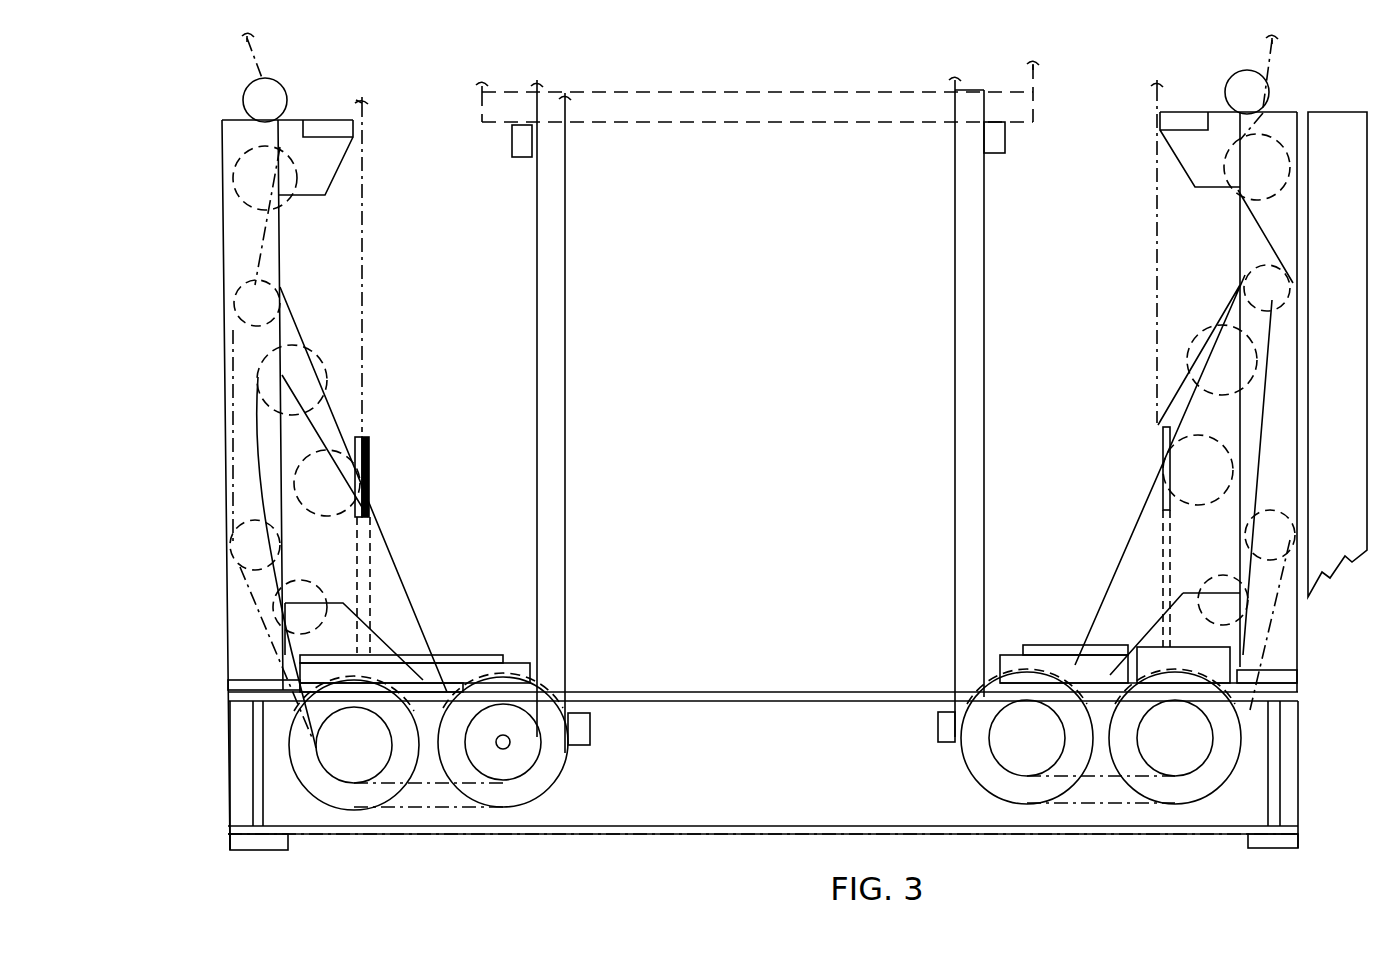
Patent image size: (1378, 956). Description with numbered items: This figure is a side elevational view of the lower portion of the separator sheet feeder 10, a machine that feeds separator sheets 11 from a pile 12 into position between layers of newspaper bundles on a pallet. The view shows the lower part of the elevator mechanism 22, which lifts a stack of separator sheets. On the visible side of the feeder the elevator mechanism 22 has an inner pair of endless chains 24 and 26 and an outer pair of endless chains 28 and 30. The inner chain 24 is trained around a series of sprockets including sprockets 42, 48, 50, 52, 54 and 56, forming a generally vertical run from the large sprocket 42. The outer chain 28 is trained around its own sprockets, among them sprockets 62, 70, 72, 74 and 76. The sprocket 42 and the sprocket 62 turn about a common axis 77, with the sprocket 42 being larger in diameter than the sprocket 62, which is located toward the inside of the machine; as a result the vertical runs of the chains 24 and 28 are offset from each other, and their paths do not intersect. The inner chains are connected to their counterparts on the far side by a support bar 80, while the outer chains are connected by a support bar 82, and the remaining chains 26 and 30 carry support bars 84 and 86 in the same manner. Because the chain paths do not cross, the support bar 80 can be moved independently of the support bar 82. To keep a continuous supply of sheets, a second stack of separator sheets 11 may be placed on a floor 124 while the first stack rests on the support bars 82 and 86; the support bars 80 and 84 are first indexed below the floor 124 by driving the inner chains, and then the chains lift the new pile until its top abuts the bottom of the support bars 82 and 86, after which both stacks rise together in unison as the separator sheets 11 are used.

The separator sheet feeder 10 is at (158, 282).
The separator sheet 11 is at (800, 113).
The pile of separator sheets 12 is at (727, 122).
The elevator mechanism 22 is at (628, 452).
The inner endless chain 24 is at (567, 590).
The inner endless chain 26 is at (953, 540).
The outer endless chain 28 is at (535, 625).
The outer endless chain 30 is at (986, 545).
The sprocket 42 is at (547, 772).
The sprocket 48 is at (254, 101).
The sprocket 50 is at (252, 180).
The sprocket 52 is at (250, 308).
The sprocket 54 is at (240, 548).
The sprocket 56 is at (348, 797).
The sprocket 62 is at (520, 763).
The sprocket 70 is at (369, 478).
The sprocket 72 is at (312, 375).
The sprocket 74 is at (303, 590).
The sprocket 76 is at (393, 762).
The common axis 77 is at (510, 743).
The support bar 80 is at (590, 730).
The support bar 82 is at (522, 140).
The support bar 84 is at (938, 730).
The support bar 86 is at (995, 138).
The floor 124 is at (790, 700).